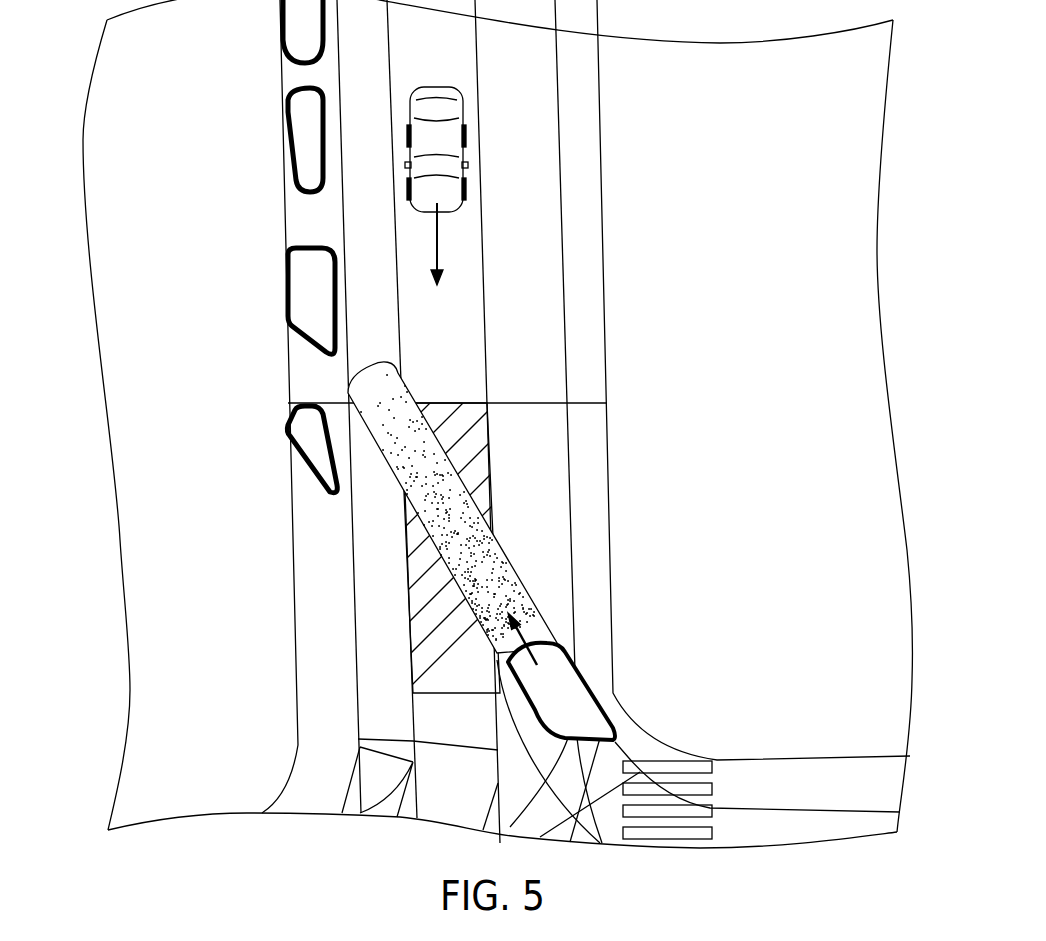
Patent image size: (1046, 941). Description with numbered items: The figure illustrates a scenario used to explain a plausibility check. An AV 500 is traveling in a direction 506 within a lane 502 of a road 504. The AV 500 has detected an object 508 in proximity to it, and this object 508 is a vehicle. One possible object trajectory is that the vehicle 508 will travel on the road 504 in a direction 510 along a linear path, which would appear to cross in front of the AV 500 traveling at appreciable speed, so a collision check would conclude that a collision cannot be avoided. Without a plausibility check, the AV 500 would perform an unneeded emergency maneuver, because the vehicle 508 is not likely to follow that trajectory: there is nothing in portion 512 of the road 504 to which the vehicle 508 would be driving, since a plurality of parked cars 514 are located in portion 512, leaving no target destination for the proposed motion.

The AV 500 is at (437, 138).
The lane 502 is at (500, 318).
The road 504 is at (577, 240).
The direction 506 is at (440, 240).
The object 508 is at (567, 688).
The direction 510 is at (523, 653).
The portion of the road 512 is at (274, 361).
The parked cars 514 is at (302, 277).